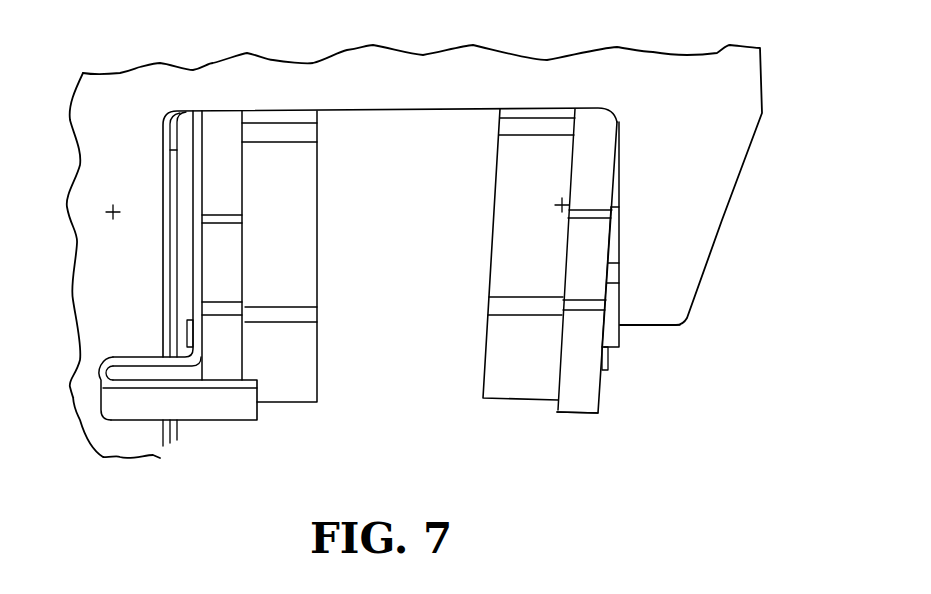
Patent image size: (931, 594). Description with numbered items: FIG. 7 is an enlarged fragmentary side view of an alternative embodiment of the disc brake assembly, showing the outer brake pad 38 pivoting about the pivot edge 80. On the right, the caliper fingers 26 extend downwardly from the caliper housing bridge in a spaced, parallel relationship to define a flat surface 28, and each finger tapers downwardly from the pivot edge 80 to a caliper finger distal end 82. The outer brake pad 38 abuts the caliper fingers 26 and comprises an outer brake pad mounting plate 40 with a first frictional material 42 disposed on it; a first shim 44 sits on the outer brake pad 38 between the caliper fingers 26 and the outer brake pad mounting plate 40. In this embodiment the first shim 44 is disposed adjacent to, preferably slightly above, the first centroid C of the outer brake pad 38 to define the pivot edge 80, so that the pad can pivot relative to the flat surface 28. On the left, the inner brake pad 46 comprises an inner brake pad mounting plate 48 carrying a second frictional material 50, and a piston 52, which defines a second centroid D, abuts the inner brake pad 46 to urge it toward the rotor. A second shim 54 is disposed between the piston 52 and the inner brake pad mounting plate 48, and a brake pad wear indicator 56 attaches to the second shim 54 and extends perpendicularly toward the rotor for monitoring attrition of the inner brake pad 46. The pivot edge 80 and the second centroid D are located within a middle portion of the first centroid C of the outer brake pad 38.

The caliper fingers 26 is at (727, 150).
The flat surface 28 is at (620, 236).
The outer brake pad 38 is at (562, 413).
The outer brake pad mounting plate 40 is at (583, 413).
The first frictional material 42 is at (490, 378).
The first shim 44 is at (609, 362).
The inner brake pad 46 is at (202, 112).
The inner brake pad mounting plate 48 is at (223, 122).
The second frictional material 50 is at (280, 123).
The piston 52 is at (178, 152).
The second shim 54 is at (193, 130).
The brake pad wear indicator 56 is at (213, 413).
The pivot edge 80 is at (620, 198).
The caliper finger distal end 82 is at (653, 328).
The first centroid C is at (560, 208).
The second centroid D is at (110, 212).